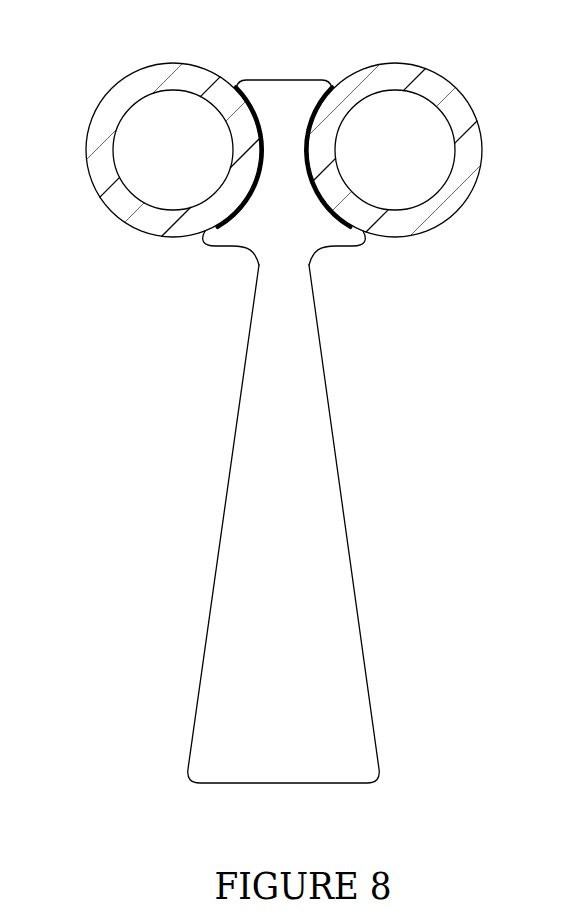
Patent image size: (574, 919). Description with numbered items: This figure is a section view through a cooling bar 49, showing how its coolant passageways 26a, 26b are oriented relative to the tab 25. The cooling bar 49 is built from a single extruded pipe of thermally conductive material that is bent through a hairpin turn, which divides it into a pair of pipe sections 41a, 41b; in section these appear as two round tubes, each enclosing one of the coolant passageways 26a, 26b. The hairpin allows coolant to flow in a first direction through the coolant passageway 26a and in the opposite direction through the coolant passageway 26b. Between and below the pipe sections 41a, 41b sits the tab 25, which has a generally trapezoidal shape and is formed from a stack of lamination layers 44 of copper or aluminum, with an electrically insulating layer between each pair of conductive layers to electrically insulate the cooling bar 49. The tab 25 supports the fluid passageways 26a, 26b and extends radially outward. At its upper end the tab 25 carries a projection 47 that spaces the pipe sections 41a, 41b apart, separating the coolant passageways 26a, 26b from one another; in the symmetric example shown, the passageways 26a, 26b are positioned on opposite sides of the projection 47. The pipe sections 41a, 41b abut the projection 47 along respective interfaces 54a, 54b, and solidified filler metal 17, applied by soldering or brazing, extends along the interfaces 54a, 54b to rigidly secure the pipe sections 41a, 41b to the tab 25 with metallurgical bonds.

The solidified filler metal 17 is at (221, 236).
The tab 25 is at (190, 502).
The coolant passageway 26a is at (118, 104).
The coolant passageway 26b is at (435, 96).
The pipe section 41a is at (90, 156).
The pipe section 41b is at (473, 147).
The lamination layers 44 is at (330, 530).
The projection 47 is at (308, 97).
The cooling bar 49 is at (152, 263).
The interface 54a is at (259, 103).
The interface 54b is at (316, 207).